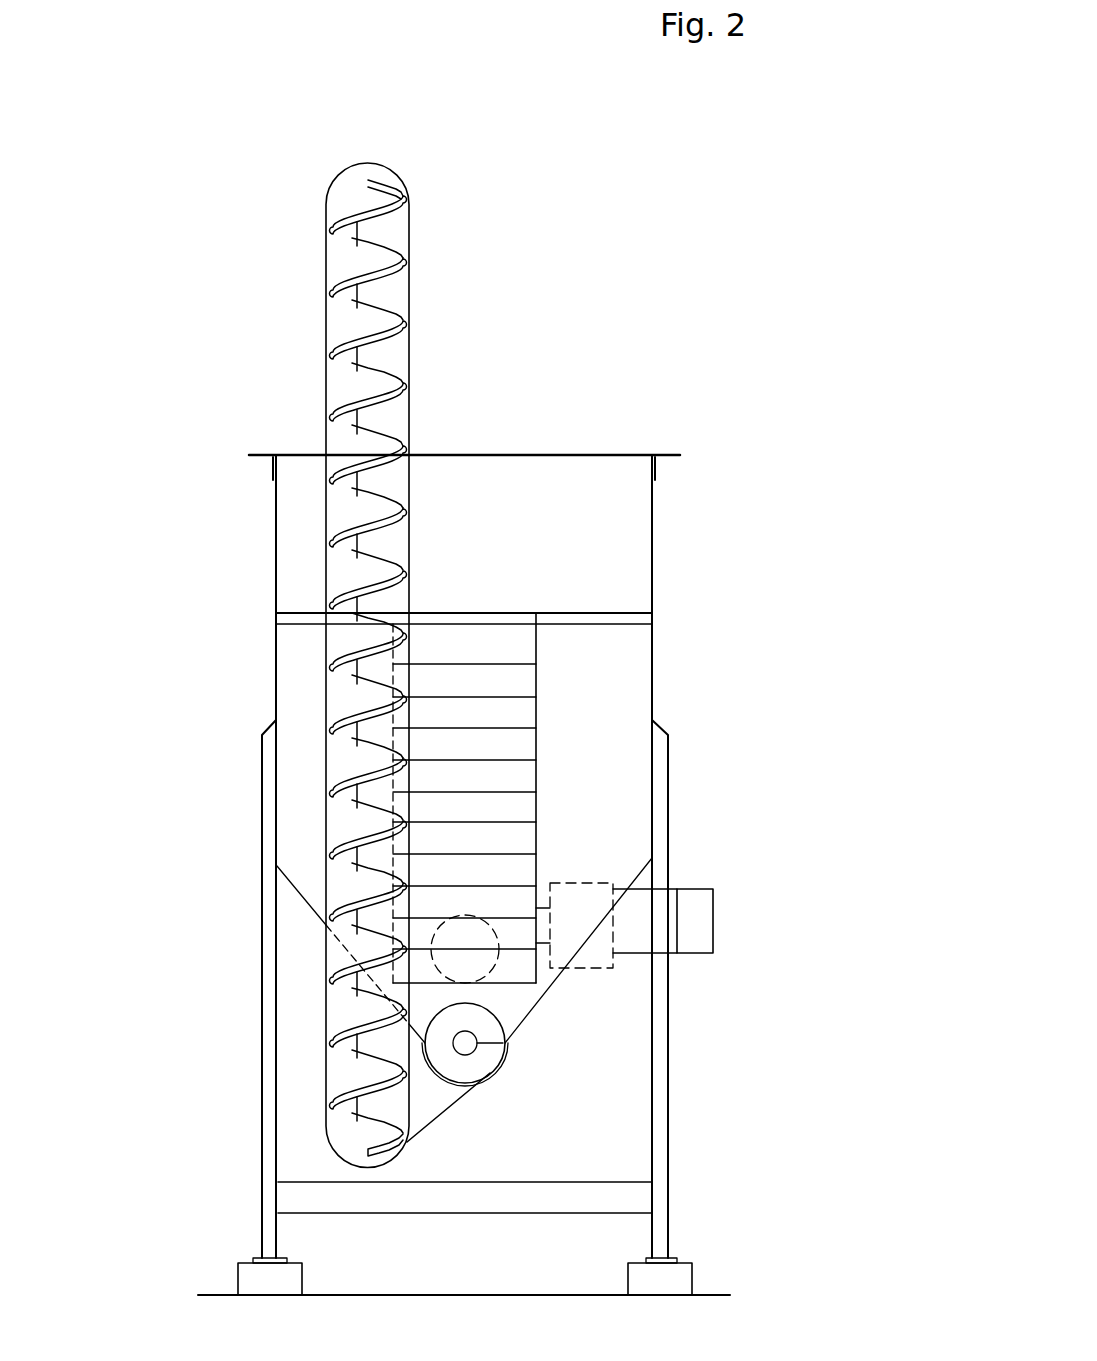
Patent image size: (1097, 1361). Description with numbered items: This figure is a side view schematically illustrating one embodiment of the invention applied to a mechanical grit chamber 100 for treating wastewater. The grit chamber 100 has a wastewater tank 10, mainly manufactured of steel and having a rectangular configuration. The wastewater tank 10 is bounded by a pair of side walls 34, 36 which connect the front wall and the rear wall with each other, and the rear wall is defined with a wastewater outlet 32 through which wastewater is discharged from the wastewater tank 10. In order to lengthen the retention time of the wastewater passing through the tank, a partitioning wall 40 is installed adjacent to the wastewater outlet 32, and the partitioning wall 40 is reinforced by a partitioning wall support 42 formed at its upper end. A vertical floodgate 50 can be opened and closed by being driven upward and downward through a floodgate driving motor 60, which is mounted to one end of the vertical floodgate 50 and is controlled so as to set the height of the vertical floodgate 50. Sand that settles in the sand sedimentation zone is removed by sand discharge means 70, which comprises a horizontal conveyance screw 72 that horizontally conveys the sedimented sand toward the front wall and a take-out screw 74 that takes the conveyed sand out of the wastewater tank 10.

The grit chamber 100 is at (200, 303).
The wastewater tank 10 is at (276, 575).
The wastewater outlet 32 is at (500, 978).
The side wall 34 is at (276, 705).
The side wall 36 is at (653, 527).
The partitioning wall 40 is at (625, 705).
The partitioning wall support 42 is at (567, 620).
The vertical floodgate 50 is at (510, 712).
The floodgate driving motor 60 is at (690, 937).
The sand discharge means 70 is at (98, 950).
The horizontal conveyance screw 72 is at (452, 1047).
The take-out screw 74 is at (345, 1043).